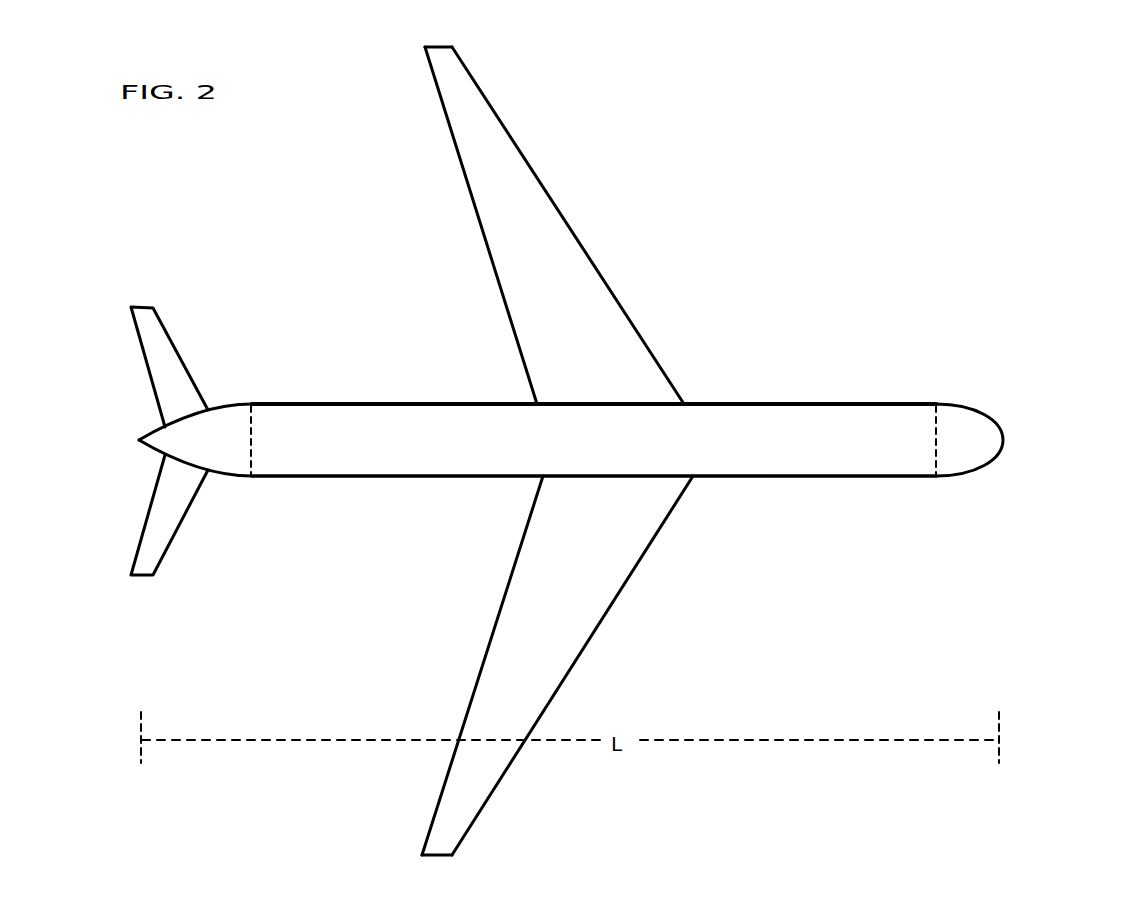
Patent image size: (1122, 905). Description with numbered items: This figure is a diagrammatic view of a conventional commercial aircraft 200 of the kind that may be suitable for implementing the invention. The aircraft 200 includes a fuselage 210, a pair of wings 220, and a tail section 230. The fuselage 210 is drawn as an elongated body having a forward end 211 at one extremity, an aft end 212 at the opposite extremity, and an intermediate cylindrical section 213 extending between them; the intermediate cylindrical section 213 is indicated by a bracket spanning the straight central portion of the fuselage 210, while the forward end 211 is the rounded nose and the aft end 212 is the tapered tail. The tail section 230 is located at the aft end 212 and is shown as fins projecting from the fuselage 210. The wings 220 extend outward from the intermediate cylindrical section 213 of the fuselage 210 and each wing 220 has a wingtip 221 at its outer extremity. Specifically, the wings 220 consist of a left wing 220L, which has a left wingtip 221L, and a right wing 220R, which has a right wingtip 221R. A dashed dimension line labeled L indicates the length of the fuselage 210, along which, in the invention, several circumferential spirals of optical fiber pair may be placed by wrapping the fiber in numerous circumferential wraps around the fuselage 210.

The conventional commercial aircraft 200 is at (698, 100).
The fuselage 210 is at (777, 460).
The forward end 211 is at (988, 438).
The aft end 212 is at (157, 445).
The intermediate cylindrical section 213 is at (934, 390).
The wings 220 is at (629, 450).
The left wing 220L is at (548, 253).
The right wing 220R is at (607, 585).
The wingtip 221 is at (516, 450).
The left wingtip 221L is at (436, 40).
The right wingtip 221R is at (435, 860).
The tail section 230 is at (170, 393).